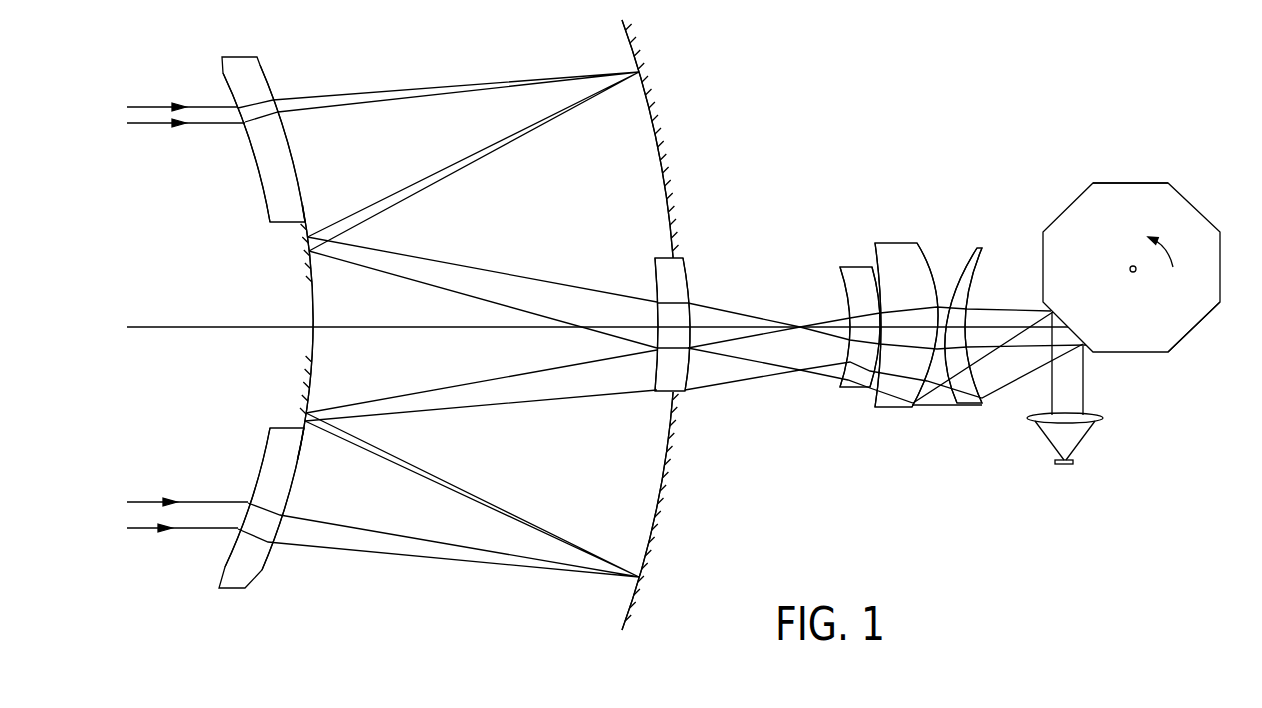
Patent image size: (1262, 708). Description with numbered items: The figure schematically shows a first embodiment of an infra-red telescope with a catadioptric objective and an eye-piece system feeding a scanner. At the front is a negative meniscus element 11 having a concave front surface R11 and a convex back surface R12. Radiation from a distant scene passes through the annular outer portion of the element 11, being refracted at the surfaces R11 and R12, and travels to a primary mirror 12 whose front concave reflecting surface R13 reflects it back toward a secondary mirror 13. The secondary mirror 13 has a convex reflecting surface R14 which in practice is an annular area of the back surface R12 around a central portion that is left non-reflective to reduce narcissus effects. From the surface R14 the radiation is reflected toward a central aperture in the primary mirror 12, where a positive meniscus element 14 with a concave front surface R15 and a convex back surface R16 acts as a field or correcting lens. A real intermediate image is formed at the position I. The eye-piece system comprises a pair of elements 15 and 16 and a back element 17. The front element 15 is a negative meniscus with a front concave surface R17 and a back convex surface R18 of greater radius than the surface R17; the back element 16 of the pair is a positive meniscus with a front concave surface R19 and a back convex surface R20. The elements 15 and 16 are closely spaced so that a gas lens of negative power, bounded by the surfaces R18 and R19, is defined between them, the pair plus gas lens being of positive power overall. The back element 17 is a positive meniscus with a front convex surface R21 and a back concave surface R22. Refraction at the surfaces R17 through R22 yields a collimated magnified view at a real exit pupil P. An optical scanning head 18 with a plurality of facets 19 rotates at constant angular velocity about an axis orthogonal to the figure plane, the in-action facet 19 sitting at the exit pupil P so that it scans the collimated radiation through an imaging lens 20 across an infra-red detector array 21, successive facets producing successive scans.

The negative meniscus element 11 is at (258, 77).
The concave front surface R11 is at (264, 190).
The convex back surface R12 is at (303, 191).
The primary mirror 12 is at (628, 45).
The front concave reflecting surface R13 is at (658, 167).
The secondary mirror 13 is at (313, 280).
The convex reflecting surface R14 is at (308, 385).
The positive meniscus element 14 is at (658, 277).
The concave front surface R15 is at (654, 378).
The convex back surface R16 is at (692, 280).
The intermediate image position I is at (791, 284).
The front element of the pair 15 is at (858, 272).
The front concave surface R17 is at (843, 368).
The back convex surface R18 is at (877, 272).
The back element of the pair 16 is at (909, 398).
The front concave surface R19 is at (871, 377).
The back convex surface R20 is at (923, 260).
The back element 17 is at (960, 287).
The front convex surface R21 is at (957, 401).
The back concave surface R22 is at (984, 266).
The optical scanning head 18 is at (1141, 342).
The facets 19 is at (1127, 181).
The exit pupil P is at (1091, 361).
The imaging lens 20 is at (1092, 422).
The infra-red detector array 21 is at (1078, 464).